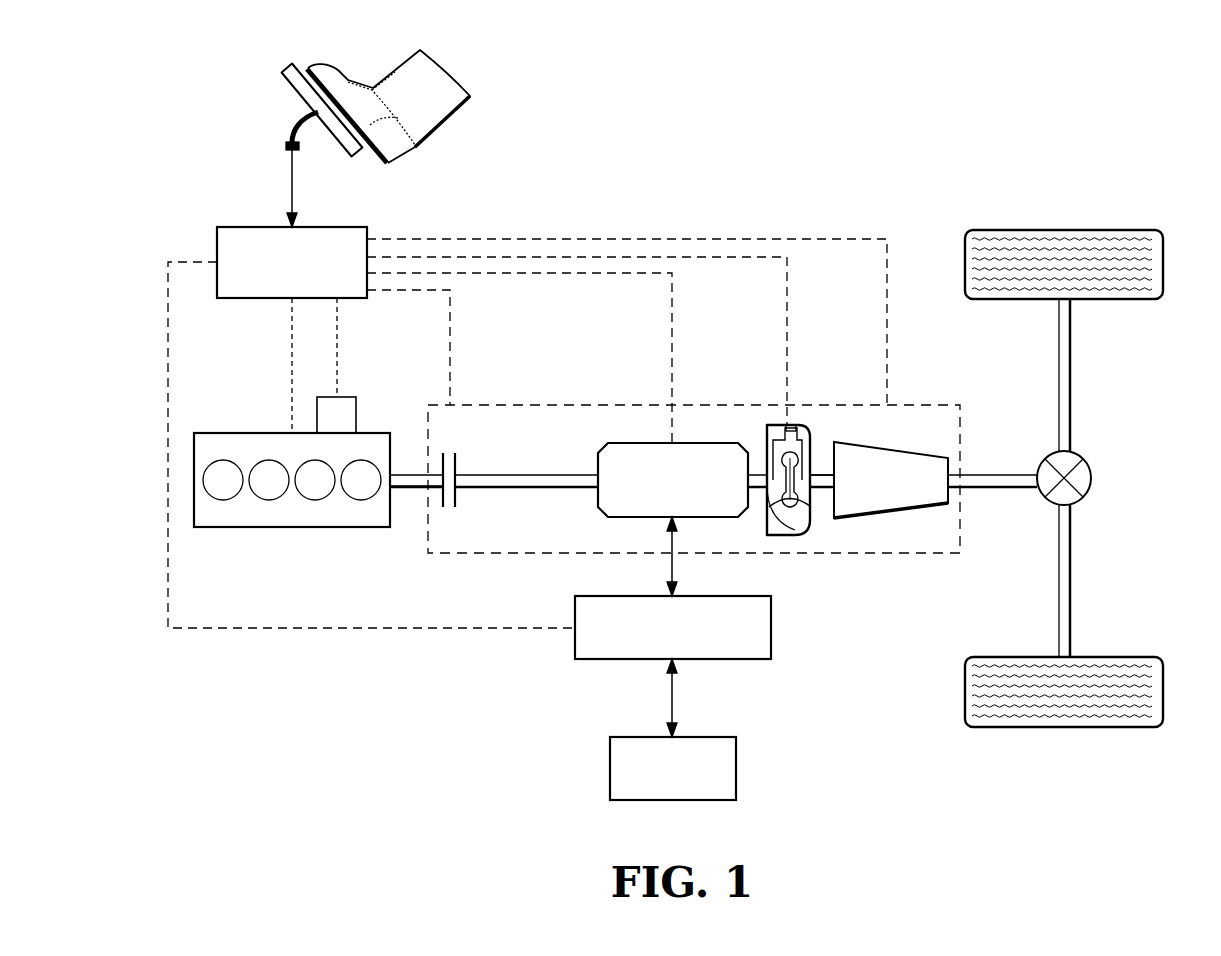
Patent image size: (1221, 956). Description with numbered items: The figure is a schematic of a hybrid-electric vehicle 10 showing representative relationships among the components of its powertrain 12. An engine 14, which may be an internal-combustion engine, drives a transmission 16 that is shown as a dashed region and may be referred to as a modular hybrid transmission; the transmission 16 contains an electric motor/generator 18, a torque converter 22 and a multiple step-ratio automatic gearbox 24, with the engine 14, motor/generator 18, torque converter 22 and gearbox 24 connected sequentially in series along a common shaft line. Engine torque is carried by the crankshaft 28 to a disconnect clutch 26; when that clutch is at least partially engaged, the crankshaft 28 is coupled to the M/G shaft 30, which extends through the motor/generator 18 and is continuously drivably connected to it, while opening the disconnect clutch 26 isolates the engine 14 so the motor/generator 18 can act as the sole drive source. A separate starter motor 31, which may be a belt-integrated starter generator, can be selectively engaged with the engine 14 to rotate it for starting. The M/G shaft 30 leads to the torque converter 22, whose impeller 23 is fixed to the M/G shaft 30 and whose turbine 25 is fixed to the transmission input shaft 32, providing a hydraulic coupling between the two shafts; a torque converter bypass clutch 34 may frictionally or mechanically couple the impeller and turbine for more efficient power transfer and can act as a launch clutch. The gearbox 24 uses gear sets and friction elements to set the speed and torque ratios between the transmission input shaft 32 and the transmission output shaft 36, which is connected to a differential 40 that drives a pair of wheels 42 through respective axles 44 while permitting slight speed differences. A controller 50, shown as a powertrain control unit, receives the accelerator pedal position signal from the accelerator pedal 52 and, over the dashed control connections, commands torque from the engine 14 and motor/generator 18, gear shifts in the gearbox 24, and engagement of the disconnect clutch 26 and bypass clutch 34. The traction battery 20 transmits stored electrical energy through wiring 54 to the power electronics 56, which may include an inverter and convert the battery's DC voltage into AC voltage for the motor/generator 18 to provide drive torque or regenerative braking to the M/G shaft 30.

The hybrid-electric vehicle 10 is at (826, 140).
The powertrain 12 is at (432, 660).
The engine 14 is at (245, 433).
The transmission 16 is at (755, 402).
The electric motor/generator (M/G) 18 is at (632, 443).
The traction battery 20 is at (736, 765).
The torque converter 22 is at (783, 535).
The impeller 23 is at (800, 500).
The gearbox 24 is at (892, 512).
The turbine 25 is at (775, 505).
The disconnect clutch 26 is at (458, 462).
The crankshaft 28 is at (420, 474).
The M/G shaft 30 is at (540, 474).
The starter motor 31 is at (345, 397).
The transmission input shaft 32 is at (823, 445).
The torque converter bypass clutch 34 is at (791, 425).
The transmission output shaft 36 is at (1003, 474).
The differential 40 is at (1092, 478).
The wheels 42 is at (1065, 230).
The axles 44 is at (1071, 378).
The controller 50 is at (255, 227).
The accelerator pedal 52 is at (303, 100).
The wiring 54 is at (675, 705).
The power electronics 56 is at (771, 627).